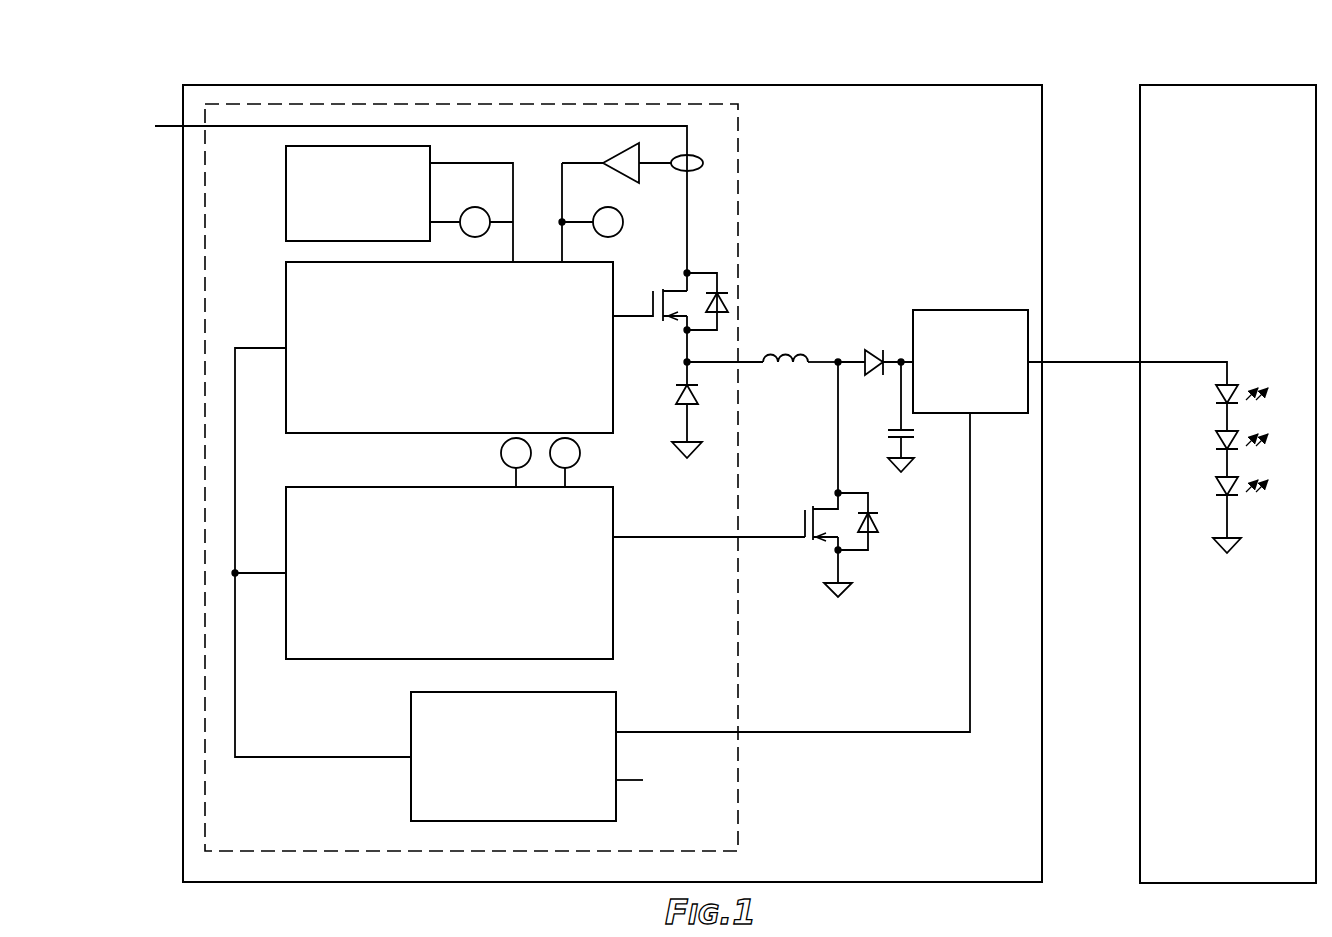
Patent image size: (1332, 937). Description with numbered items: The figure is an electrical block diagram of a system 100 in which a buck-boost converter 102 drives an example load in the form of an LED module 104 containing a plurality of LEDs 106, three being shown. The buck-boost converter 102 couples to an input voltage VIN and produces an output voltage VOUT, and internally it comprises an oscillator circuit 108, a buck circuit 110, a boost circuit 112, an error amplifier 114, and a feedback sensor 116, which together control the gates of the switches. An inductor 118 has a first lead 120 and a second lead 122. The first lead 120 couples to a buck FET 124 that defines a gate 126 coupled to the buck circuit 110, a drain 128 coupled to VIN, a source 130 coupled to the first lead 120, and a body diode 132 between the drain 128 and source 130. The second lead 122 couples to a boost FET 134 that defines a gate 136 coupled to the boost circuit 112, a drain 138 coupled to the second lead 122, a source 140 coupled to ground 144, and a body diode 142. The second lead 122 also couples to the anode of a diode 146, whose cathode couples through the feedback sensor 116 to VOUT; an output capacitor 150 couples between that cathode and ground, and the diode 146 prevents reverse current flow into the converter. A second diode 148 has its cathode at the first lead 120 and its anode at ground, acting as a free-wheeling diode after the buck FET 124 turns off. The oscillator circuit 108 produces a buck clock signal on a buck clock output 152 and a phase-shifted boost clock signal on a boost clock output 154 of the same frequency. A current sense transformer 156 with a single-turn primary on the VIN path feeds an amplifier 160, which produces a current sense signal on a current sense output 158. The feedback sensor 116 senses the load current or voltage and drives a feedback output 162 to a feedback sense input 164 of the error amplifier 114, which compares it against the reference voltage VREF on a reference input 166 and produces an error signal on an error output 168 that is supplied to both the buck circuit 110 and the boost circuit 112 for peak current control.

The system 100 is at (170, 58).
The buck-boost converter 102 is at (225, 85).
The LED module 104 is at (1228, 484).
The LEDs 106 is at (1198, 502).
The oscillator circuit 108 is at (284, 167).
The buck circuit 110 is at (449, 347).
The boost circuit 112 is at (449, 573).
The error amplifier 114 is at (513, 756).
The feedback sensor 116 is at (970, 309).
The inductor 118 is at (817, 310).
The first lead 120 is at (758, 357).
The second lead 122 is at (813, 357).
The buck FET 124 is at (716, 274).
The gate 126 is at (653, 303).
The drain 128 is at (692, 272).
The source 130 is at (685, 333).
The body diode 132 is at (740, 282).
The boost FET 134 is at (787, 484).
The gate 136 is at (803, 530).
The drain 138 is at (836, 490).
The source 140 is at (836, 553).
The body diode 142 is at (880, 537).
The ground 144 is at (850, 593).
The diode 146 is at (880, 343).
The second diode 148 is at (671, 410).
The output capacitor 150 is at (900, 428).
The buck clock output 152 is at (470, 163).
The boost clock output 154 is at (440, 221).
The current sense transformer 156 is at (704, 155).
The current sense output 158 is at (578, 160).
The amplifier 160 is at (626, 146).
The feedback output 162 is at (972, 418).
The feedback sense input 164 is at (620, 730).
The reference input 166 is at (620, 778).
The error output 168 is at (408, 756).